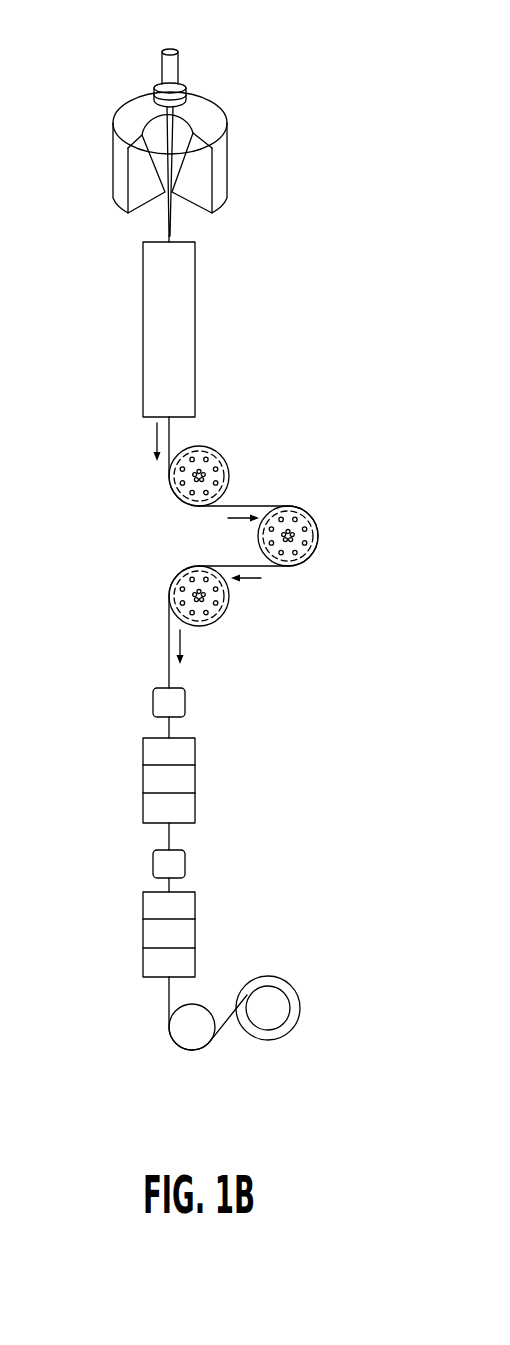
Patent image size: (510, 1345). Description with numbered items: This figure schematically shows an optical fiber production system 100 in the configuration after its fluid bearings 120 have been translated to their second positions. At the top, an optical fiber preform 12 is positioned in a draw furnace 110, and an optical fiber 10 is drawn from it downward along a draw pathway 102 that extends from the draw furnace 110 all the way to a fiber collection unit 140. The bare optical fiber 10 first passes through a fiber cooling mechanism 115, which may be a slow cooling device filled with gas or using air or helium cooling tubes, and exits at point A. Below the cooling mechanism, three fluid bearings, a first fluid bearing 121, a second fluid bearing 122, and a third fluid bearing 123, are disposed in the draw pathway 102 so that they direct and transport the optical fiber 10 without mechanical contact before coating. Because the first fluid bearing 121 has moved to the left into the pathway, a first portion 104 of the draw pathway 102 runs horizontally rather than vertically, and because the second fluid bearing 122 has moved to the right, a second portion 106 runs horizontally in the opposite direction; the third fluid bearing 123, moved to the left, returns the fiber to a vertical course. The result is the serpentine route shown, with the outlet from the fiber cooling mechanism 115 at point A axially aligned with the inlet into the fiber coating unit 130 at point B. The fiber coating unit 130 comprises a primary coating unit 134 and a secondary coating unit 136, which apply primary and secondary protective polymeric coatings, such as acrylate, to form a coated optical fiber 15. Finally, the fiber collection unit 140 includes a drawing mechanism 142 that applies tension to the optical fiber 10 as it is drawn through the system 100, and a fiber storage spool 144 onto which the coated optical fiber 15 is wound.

The optical fiber production system 100 is at (283, 58).
The draw furnace 110 is at (227, 128).
The optical fiber preform 12 is at (193, 122).
The optical fiber 10 is at (162, 230).
The fiber cooling mechanism 115 is at (185, 313).
The point A is at (169, 435).
The fluid bearings 120 is at (298, 508).
The first fluid bearing 121 is at (213, 458).
The second fluid bearing 122 is at (312, 537).
The third fluid bearing 123 is at (207, 607).
The first portion of draw pathway 104 is at (257, 505).
The second portion of draw pathway 106 is at (228, 567).
The draw pathway 102 is at (158, 628).
The point B is at (167, 677).
The fiber coating unit 130 is at (127, 680).
The primary coating unit 134 is at (185, 782).
The secondary coating unit 136 is at (185, 932).
The coated optical fiber 15 is at (161, 1005).
The fiber collection unit 140 is at (263, 1090).
The drawing mechanism 142 is at (192, 1030).
The fiber storage spool 144 is at (267, 1013).